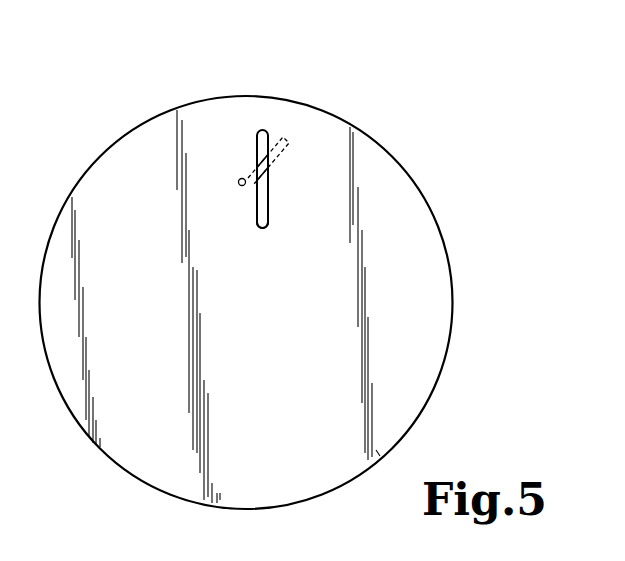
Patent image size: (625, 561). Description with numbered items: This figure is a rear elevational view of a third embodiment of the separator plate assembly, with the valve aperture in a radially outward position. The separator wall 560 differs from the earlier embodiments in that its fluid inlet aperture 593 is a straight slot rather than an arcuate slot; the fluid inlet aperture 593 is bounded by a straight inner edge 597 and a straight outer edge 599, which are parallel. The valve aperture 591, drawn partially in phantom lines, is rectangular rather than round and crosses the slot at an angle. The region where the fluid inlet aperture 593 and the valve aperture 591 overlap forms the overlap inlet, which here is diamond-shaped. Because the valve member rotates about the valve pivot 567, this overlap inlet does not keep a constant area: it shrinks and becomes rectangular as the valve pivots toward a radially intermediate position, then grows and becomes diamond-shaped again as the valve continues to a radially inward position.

The separator wall 560 is at (285, 386).
The valve aperture 591 is at (261, 154).
The fluid inlet aperture 593 is at (269, 212).
The straight inner edge 597 is at (257, 215).
The straight outer edge 599 is at (269, 183).
The valve pivot 567 is at (239, 185).